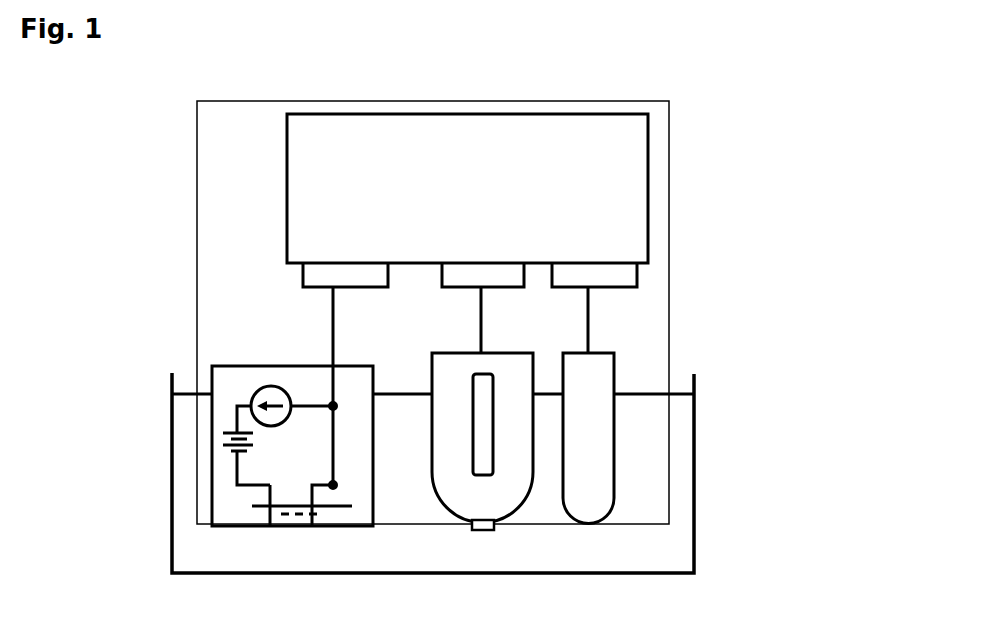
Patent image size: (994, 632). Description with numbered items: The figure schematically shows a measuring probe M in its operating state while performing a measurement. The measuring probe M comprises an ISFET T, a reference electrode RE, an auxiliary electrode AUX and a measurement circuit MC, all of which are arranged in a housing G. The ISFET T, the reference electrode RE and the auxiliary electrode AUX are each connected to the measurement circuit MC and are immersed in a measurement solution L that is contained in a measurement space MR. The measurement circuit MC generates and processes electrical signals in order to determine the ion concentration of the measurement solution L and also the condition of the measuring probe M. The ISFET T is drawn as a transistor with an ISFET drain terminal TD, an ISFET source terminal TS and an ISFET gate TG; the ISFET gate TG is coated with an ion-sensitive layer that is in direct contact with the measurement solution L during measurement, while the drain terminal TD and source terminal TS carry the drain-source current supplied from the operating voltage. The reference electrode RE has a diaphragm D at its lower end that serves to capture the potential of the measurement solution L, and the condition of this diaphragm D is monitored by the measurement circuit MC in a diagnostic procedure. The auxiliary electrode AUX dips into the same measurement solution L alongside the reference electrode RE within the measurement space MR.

The measurement circuit MC is at (630, 174).
The housing G is at (669, 263).
The ISFET T is at (257, 377).
The ISFET source terminal TS is at (243, 505).
The ISFET drain terminal TD is at (341, 501).
The ISFET gate TG is at (302, 529).
The reference electrode RE is at (461, 352).
The auxiliary electrode AUX is at (573, 352).
The diaphragm D is at (482, 530).
The measurement space MR is at (696, 442).
The measurement solution L is at (669, 562).
The measuring probe M is at (739, 478).